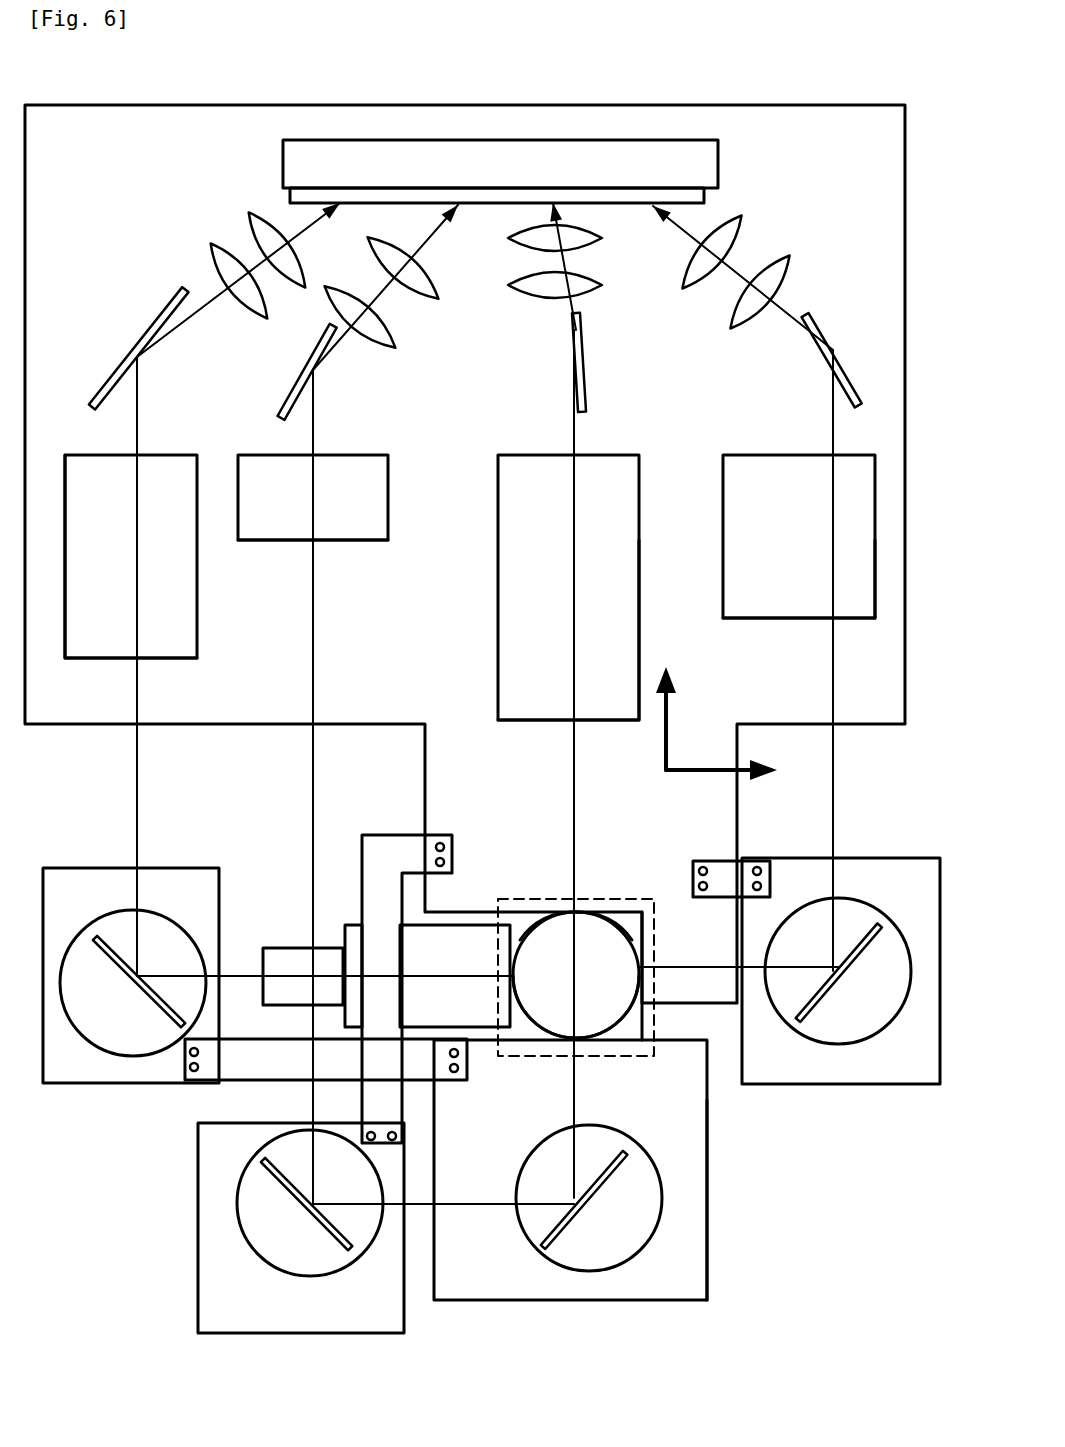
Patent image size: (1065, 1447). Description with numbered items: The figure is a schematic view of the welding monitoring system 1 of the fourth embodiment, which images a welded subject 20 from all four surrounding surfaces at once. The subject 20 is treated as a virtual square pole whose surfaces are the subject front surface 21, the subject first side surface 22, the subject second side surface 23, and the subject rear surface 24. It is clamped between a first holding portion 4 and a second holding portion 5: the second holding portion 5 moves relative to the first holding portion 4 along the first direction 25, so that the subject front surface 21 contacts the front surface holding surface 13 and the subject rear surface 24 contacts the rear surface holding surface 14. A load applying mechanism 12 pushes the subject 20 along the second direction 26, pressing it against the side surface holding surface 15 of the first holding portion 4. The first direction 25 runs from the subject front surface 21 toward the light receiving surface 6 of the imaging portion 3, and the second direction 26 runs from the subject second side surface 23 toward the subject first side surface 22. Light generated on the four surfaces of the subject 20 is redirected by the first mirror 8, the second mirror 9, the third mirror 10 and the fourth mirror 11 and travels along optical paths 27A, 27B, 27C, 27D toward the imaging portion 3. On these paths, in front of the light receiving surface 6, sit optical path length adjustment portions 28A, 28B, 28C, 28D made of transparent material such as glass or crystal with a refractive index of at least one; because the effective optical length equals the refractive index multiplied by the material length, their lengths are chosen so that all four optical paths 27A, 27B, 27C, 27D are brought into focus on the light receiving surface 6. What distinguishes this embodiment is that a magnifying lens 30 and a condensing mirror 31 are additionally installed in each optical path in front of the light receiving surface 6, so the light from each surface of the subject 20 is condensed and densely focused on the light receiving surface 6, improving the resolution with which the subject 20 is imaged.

The welding monitoring system 1 is at (76, 77).
The imaging portion 3 is at (458, 140).
The first holding portion 4 is at (220, 724).
The second holding portion 5 is at (707, 1138).
The light receiving surface 6 is at (488, 205).
The first mirror 8 is at (862, 906).
The second mirror 9 is at (120, 975).
The third mirror 10 is at (612, 1160).
The fourth mirror 11 is at (282, 1170).
The load applying mechanism 12 is at (355, 925).
The front surface holding surface 13 is at (523, 913).
The rear surface holding surface 14 is at (530, 1052).
The side surface holding surface 15 is at (640, 926).
The subject 20 is at (625, 1041).
The subject front surface 21 is at (612, 900).
The subject first side surface 22 is at (655, 1031).
The subject second side surface 23 is at (500, 953).
The subject rear surface 24 is at (510, 1056).
The first direction 25 is at (668, 721).
The second direction 26 is at (690, 776).
The optical path 27A is at (140, 475).
The optical path 27B is at (316, 475).
The optical path 27C is at (576, 475).
The optical path 27D is at (820, 475).
The optical path length adjustment portion 28A is at (198, 580).
The optical path length adjustment portion 28B is at (355, 545).
The optical path length adjustment portion 28C is at (640, 575).
The optical path length adjustment portion 28D is at (855, 620).
The magnifying lens 30 is at (246, 212).
The condensing mirror 31 is at (118, 358).